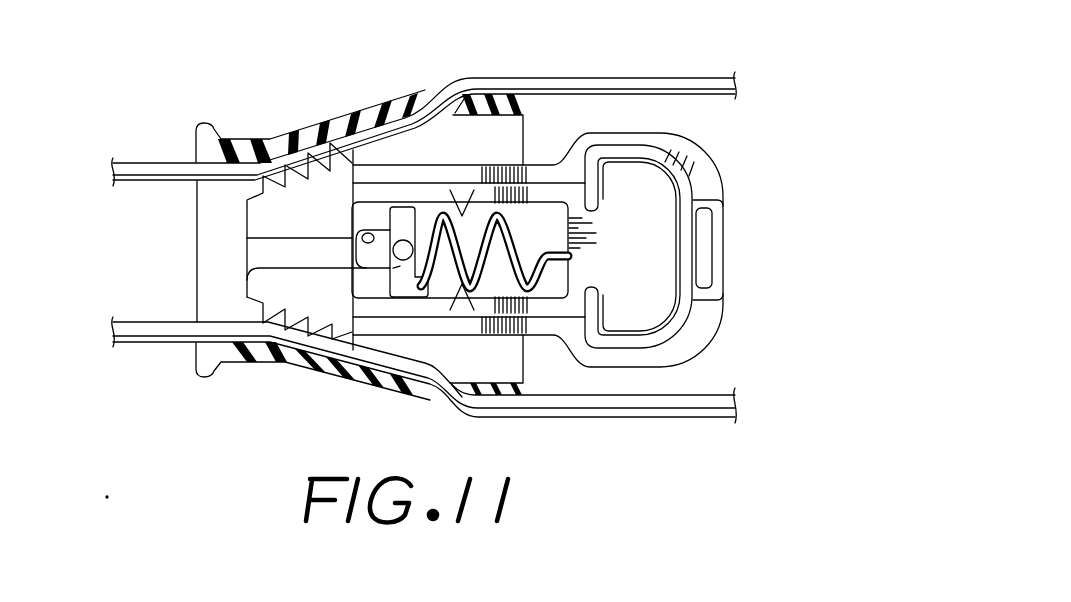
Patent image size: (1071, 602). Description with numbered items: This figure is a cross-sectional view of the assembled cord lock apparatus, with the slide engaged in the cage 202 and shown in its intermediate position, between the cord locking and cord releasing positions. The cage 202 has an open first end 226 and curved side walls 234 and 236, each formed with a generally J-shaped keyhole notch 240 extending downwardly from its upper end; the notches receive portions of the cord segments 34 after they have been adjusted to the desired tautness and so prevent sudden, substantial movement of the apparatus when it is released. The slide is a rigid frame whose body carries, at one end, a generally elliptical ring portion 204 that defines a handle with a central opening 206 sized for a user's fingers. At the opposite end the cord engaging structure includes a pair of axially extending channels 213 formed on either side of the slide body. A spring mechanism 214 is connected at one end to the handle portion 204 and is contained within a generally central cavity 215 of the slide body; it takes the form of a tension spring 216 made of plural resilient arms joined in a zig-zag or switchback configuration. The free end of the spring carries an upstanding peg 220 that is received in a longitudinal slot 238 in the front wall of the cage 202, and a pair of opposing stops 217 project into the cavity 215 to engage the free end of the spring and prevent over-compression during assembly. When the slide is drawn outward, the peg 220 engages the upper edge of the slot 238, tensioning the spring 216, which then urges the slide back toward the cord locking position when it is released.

The cage 202 is at (258, 92).
The cord segments 34 is at (658, 85).
The curved side wall 236 is at (330, 120).
The curved side wall 234 is at (335, 384).
The keyhole notch 240 is at (435, 74).
The first end 226 is at (535, 122).
The spring mechanism 214 is at (540, 302).
The central cavity 215 is at (548, 203).
The stops 217 is at (465, 207).
The axially extending channels 213 is at (248, 239).
The longitudinal slot 238 is at (199, 165).
The peg 220 is at (403, 245).
The tension spring 216 is at (462, 250).
The central opening 206 is at (666, 178).
The ring portion 204 is at (722, 318).